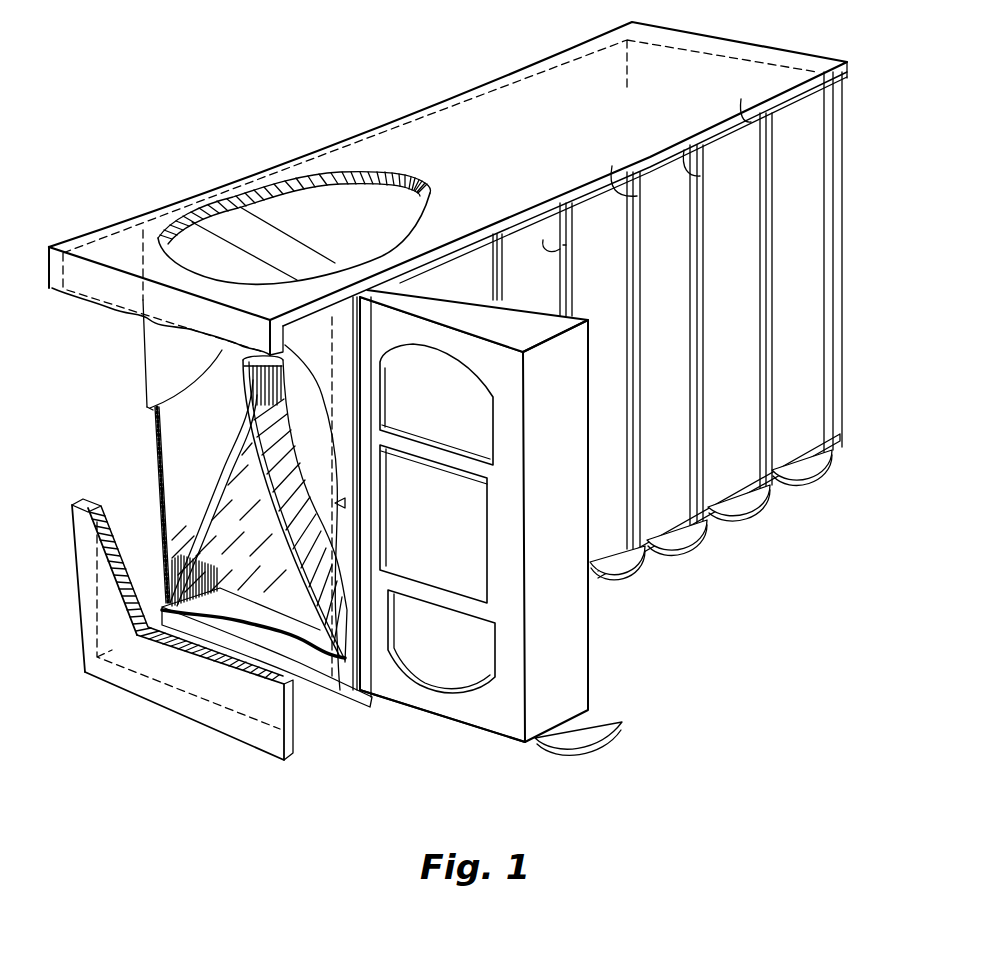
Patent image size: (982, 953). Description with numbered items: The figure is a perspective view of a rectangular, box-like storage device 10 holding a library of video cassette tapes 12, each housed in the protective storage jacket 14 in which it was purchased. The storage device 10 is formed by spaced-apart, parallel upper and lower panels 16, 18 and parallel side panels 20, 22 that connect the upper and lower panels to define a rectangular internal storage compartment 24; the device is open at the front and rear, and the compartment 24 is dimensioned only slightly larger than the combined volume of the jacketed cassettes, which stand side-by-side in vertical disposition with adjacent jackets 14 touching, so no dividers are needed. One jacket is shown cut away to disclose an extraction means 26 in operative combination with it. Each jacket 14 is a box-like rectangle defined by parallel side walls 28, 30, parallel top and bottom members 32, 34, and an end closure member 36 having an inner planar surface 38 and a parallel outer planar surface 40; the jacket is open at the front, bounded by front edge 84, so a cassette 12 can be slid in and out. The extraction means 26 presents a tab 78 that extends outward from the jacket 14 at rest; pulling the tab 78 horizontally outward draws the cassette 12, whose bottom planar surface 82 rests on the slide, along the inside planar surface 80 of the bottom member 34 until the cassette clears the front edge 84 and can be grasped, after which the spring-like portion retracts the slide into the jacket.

The storage device 10 is at (396, 110).
The video cassette tape 12 is at (806, 257).
The protective storage jacket 14 is at (834, 183).
The upper panel 16 is at (498, 100).
The lower panel 18 is at (168, 708).
The side panel 20 is at (98, 602).
The side panel 22 is at (849, 98).
The internal storage compartment 24 is at (323, 694).
The extraction means 26 is at (241, 390).
The side wall 28 is at (624, 196).
The side wall 30 is at (563, 245).
The top member 32 is at (414, 272).
The bottom member 34 is at (645, 548).
The end closure member 36 is at (212, 493).
The inner planar surface 38 is at (176, 482).
The outer planar surface 40 is at (154, 433).
The tab 78 is at (806, 461).
The inside planar surface 80 is at (223, 603).
The bottom planar surface 82 is at (497, 736).
The front edge 84 is at (391, 610).